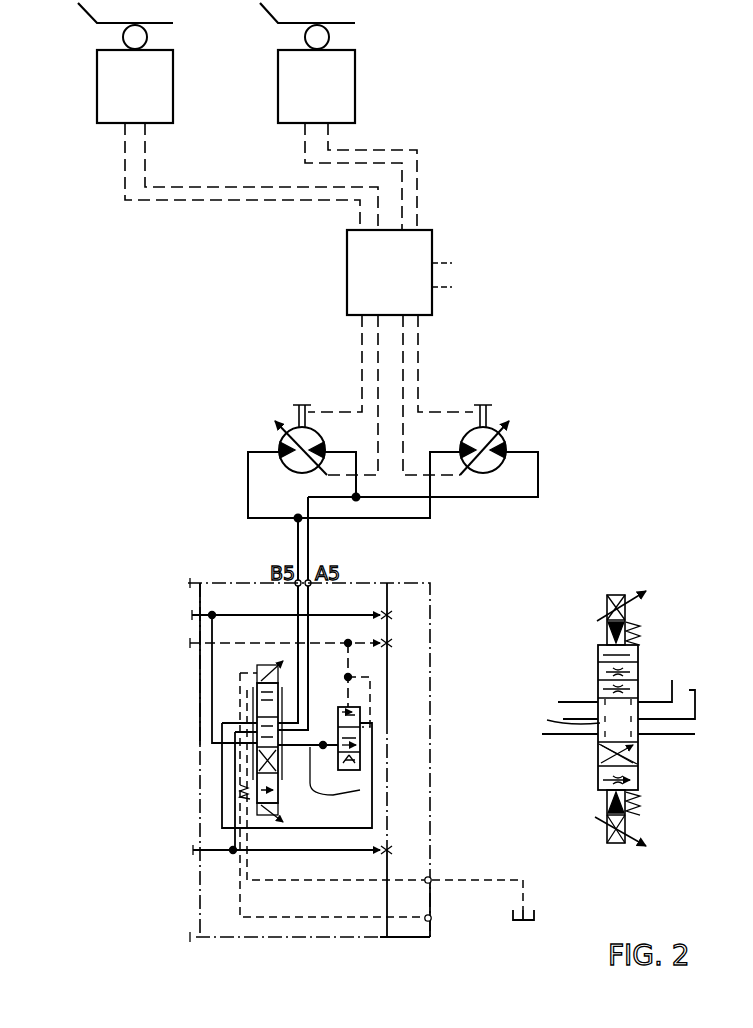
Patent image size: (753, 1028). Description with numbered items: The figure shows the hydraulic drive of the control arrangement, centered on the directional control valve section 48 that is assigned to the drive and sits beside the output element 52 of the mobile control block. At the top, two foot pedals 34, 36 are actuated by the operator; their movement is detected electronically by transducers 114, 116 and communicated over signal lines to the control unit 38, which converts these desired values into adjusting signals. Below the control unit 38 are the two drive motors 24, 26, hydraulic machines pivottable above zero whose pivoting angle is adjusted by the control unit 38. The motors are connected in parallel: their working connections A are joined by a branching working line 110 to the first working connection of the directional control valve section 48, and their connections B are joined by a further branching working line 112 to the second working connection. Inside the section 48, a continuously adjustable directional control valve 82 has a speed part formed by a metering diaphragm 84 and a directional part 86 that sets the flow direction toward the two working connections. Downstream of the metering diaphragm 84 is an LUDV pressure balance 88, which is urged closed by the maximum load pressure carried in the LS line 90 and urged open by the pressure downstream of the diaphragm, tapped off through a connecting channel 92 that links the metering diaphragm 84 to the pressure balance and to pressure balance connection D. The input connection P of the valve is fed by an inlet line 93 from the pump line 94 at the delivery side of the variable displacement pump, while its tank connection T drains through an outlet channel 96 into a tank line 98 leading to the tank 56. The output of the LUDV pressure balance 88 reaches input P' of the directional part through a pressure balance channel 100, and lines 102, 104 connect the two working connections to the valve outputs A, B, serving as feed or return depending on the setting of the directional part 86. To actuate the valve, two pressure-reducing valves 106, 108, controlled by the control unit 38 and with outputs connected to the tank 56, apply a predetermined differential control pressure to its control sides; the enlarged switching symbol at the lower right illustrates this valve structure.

The foot pedal 34 is at (85, 20).
The foot pedal 36 is at (267, 20).
The transducer 114 is at (152, 105).
The transducer 116 is at (334, 105).
The control unit 38 is at (402, 287).
The drive motor 26 is at (279, 443).
The drive motor 24 is at (507, 438).
The branching working line 112 is at (295, 537).
The branching working line 110 is at (312, 540).
The directional control valve section 48 is at (297, 940).
The output element 52 is at (397, 940).
The pump line 94 is at (237, 615).
The LS line 90 is at (237, 642).
The inlet line 93 is at (212, 672).
The line 102 is at (297, 597).
The line 104 is at (312, 603).
The directional control valve 82 is at (244, 705).
The tank 56 is at (540, 912).
The outlet channel 96 is at (233, 833).
The tank line 98 is at (213, 850).
The pressure balance channel 100 is at (300, 830).
The LUDV pressure balance 88 is at (360, 747).
The connecting channel 92 is at (360, 790).
The pressure-reducing valve 108 is at (607, 603).
The directional part 86 is at (600, 755).
The pressure-reducing valve 106 is at (632, 823).
The metering diaphragm 84 is at (638, 777).